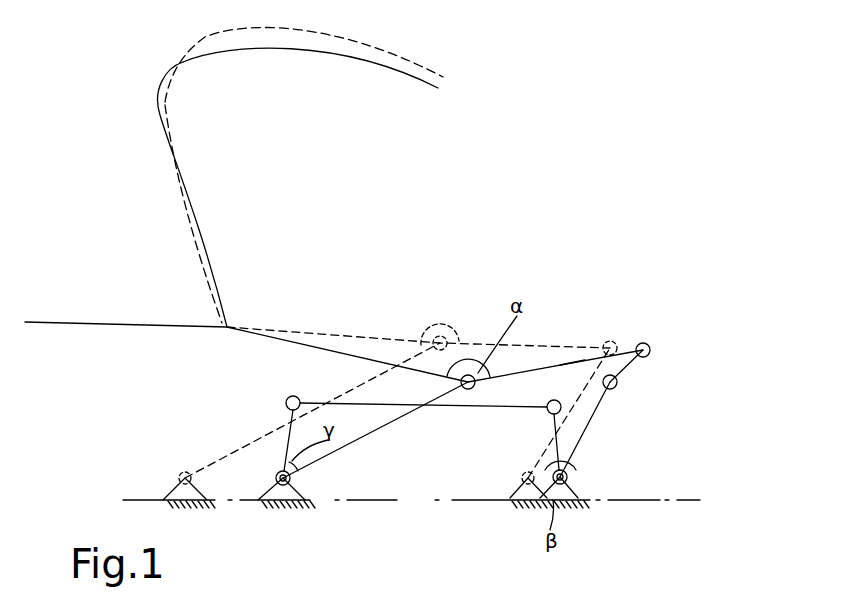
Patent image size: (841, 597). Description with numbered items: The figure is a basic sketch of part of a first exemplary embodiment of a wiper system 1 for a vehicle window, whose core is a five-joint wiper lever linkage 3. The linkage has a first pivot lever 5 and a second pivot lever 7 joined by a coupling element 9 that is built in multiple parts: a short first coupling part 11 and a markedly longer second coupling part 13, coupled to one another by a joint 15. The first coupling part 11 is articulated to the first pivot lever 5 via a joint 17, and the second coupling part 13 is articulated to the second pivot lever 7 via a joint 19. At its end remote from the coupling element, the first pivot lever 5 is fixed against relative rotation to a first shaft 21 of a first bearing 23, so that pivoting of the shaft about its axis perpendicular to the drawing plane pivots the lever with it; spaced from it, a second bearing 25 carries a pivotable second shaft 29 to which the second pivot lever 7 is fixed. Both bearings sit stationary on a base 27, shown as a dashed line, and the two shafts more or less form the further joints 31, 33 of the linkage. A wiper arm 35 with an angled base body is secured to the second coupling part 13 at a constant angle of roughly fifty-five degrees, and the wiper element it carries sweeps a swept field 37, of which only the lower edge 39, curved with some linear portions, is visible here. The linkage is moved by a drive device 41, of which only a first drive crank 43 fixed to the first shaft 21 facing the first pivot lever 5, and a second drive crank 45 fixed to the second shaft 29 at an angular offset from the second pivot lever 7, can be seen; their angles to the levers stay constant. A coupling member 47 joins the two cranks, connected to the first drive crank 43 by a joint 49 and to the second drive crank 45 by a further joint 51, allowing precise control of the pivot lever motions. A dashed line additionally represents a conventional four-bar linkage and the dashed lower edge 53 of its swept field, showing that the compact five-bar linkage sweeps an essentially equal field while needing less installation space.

The wiper system 1 is at (515, 110).
The wiper lever linkage 3 is at (631, 266).
The first pivot lever 5 is at (600, 413).
The second pivot lever 7 is at (382, 427).
The coupling element 9 is at (553, 360).
The first coupling part 11 is at (627, 362).
The second coupling part 13 is at (572, 362).
The joint 15 is at (651, 342).
The joint 17 is at (618, 385).
The joint 19 is at (470, 360).
The first shaft 21 is at (567, 478).
The first bearing 23 is at (578, 512).
The second bearing 25 is at (278, 508).
The base 27 is at (677, 501).
The second shaft 29 is at (290, 478).
The joint 31 is at (569, 471).
The joint 33 is at (272, 472).
The wiper arm 35 is at (335, 352).
The swept field 37 is at (170, 50).
The lower edge 39 is at (263, 50).
The drive device 41 is at (547, 432).
The first drive crank 43 is at (555, 435).
The second drive crank 45 is at (288, 437).
The coupling member 47 is at (447, 410).
The joint 49 is at (547, 403).
The joint 51 is at (287, 398).
The raised hood contour 53 is at (357, 40).